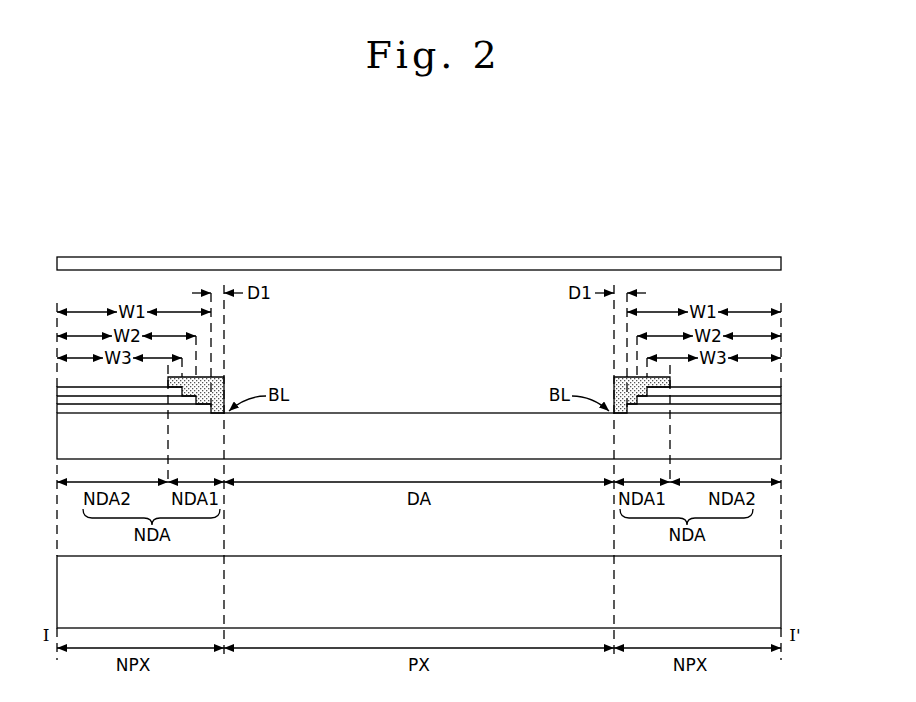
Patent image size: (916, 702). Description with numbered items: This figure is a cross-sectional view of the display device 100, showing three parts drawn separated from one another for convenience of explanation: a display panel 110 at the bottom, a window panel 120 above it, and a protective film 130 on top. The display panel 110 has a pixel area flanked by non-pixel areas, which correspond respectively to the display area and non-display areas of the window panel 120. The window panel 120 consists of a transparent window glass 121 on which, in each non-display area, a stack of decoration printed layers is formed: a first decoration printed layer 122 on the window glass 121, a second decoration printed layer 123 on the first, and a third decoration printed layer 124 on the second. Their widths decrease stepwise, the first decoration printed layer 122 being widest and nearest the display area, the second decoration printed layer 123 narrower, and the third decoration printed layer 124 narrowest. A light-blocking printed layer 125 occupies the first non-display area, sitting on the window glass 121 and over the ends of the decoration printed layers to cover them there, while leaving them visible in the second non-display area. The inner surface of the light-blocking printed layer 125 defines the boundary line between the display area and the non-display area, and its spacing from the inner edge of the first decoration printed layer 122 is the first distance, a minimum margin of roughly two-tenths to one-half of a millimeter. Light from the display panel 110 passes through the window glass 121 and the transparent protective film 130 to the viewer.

The display device 100 is at (768, 201).
The display panel 110 is at (775, 593).
The window panel 120 is at (479, 403).
The window glass 121 is at (775, 445).
The first decoration printed layer 122 is at (781, 408).
The second decoration printed layer 123 is at (781, 398).
The third decoration printed layer 124 is at (781, 388).
The light-blocking printed layer 125 is at (670, 379).
The protective film 130 is at (781, 264).